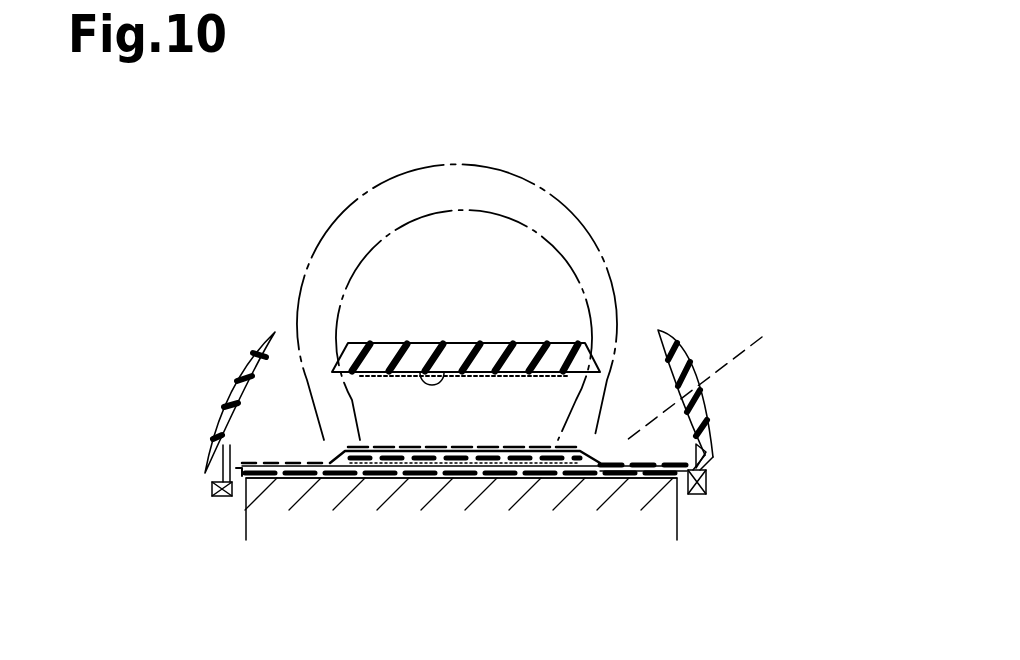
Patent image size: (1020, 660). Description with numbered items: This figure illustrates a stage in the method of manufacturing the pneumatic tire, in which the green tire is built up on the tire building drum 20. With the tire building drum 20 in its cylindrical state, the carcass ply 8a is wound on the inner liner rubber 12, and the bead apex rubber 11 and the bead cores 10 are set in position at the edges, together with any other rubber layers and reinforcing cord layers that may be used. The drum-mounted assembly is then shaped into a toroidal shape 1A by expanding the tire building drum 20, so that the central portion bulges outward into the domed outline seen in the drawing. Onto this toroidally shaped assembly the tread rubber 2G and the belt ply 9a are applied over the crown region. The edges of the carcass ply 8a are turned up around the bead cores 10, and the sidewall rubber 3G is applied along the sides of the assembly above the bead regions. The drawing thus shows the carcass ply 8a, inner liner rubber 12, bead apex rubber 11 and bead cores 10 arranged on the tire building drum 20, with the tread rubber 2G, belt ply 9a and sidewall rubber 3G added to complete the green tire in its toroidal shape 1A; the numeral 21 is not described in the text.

The toroidal shape 1A is at (522, 178).
The tread rubber 2G is at (403, 345).
The sidewall rubber 3G is at (706, 394).
The carcass ply 8a is at (766, 335).
The belt ply 9a is at (457, 360).
The bead core 10 is at (707, 484).
The bead apex rubber 11 is at (706, 453).
The inner liner rubber 12 is at (628, 478).
The tire building drum 20 is at (268, 512).
The side plate 21 is at (240, 328).